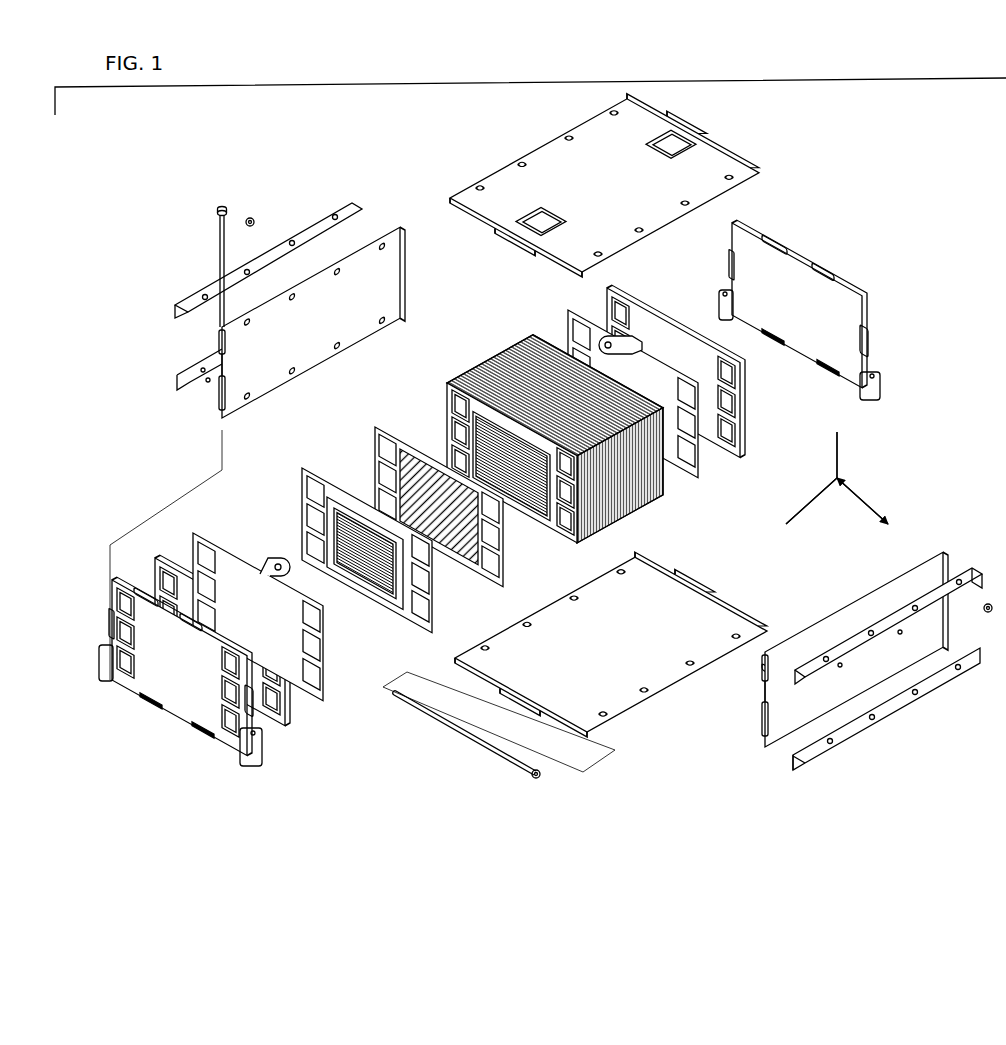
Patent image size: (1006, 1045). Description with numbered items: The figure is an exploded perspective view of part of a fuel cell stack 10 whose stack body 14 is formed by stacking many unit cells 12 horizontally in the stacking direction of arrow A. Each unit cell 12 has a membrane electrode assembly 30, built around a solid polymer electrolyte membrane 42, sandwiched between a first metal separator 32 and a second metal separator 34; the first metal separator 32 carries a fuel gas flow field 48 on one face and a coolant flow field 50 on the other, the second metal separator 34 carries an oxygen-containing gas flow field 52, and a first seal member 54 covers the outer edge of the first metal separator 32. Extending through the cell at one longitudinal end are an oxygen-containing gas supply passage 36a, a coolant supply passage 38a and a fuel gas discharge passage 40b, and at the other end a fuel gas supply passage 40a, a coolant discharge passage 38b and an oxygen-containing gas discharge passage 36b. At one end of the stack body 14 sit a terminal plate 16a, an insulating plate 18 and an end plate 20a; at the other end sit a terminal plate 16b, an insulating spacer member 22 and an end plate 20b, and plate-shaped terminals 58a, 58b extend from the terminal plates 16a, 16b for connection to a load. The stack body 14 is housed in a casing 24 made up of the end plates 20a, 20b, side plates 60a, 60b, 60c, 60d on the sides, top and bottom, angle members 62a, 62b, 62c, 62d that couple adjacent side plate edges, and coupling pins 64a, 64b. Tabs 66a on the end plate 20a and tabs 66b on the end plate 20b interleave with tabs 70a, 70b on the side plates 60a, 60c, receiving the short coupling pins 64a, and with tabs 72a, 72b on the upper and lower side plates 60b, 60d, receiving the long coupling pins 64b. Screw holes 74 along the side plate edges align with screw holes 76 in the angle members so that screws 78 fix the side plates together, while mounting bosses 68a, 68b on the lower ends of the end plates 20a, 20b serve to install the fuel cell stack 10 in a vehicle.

The fuel cell stack 10 is at (320, 157).
The unit cell 12 is at (515, 355).
The stack body 14 is at (542, 422).
The terminal plate 16a is at (258, 602).
The terminal plate 16b is at (633, 394).
The insulating plate 18 is at (168, 566).
The end plate 20a is at (187, 680).
The end plate 20b is at (803, 449).
The insulating spacer member 22 is at (742, 420).
The casing 24 is at (602, 184).
The membrane electrode assembly 30 is at (438, 496).
The first metal separator 32 is at (305, 465).
The second metal separator 34 is at (515, 450).
The oxygen-containing gas supply passage 36a is at (113, 603).
The oxygen-containing gas discharge passage 36b is at (228, 732).
The coolant supply passage 38a is at (114, 630).
The coolant discharge passage 38b is at (230, 686).
The fuel gas supply passage 40a is at (227, 661).
The fuel gas discharge passage 40b is at (116, 668).
The solid polymer electrolyte membrane 42 is at (383, 425).
The fuel gas flow field 48 is at (352, 573).
The coolant flow field 50 is at (378, 575).
The oxygen-containing gas flow field 52 is at (488, 422).
The first seal member 54 is at (365, 571).
The terminal 58a is at (268, 555).
The terminal 58b is at (612, 355).
The side plate 60a is at (855, 646).
The side plate 60b is at (604, 184).
The side plate 60c is at (575, 457).
The side plate 60d is at (611, 637).
The angle member 62a is at (834, 642).
The angle member 62b is at (568, 461).
The angle member 62c is at (197, 398).
The angle member 62d is at (942, 672).
The coupling pin 64a is at (218, 262).
The coupling pin 64b is at (444, 722).
The tab 66a is at (282, 742).
The tab 66b is at (728, 266).
The mounting boss 68a is at (103, 684).
The mounting boss 68b is at (722, 305).
The tab 70a is at (760, 662).
The tab 70b is at (218, 342).
The tab 72a is at (706, 136).
The tab 72b is at (524, 698).
The screw hole 74 is at (294, 368).
The screw hole 76 is at (292, 240).
The screw 78 is at (250, 218).